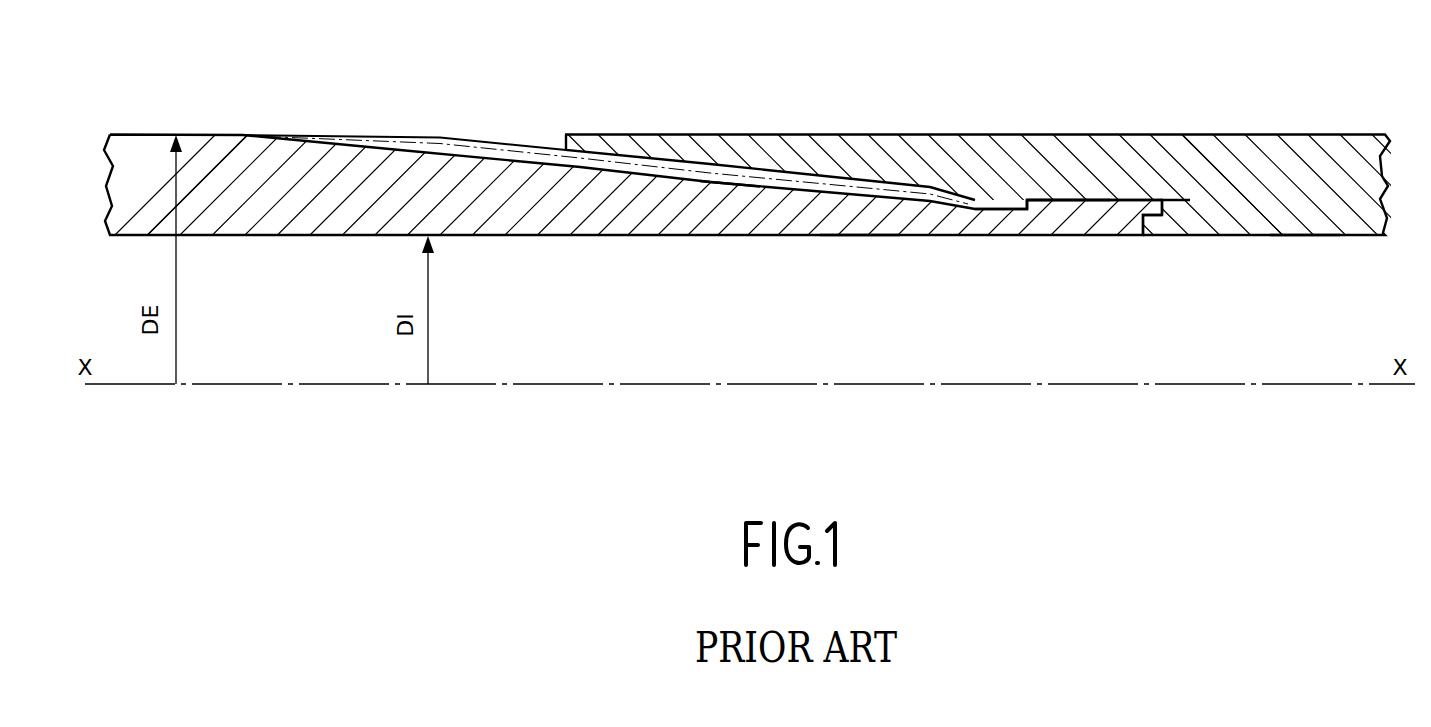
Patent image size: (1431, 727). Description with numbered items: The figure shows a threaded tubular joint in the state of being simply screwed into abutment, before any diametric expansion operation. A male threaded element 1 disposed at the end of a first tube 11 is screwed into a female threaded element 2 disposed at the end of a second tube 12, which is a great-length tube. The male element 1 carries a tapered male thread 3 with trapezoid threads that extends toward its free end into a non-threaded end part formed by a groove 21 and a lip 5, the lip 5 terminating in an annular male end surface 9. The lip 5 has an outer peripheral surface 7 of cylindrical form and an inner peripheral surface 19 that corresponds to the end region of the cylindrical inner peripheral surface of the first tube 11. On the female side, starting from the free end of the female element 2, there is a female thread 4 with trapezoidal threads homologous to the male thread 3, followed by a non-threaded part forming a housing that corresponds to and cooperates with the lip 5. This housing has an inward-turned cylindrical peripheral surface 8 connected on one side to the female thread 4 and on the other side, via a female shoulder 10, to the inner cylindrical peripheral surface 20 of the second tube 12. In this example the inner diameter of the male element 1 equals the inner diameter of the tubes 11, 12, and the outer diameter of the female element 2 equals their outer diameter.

The male threaded element 1 is at (664, 237).
The female threaded element 2 is at (842, 113).
The male thread 3 is at (468, 150).
The female thread 4 is at (742, 195).
The lip 5 is at (1082, 213).
The outer peripheral surface 7 is at (1053, 203).
The peripheral surface 8 is at (1103, 200).
The annular male end surface 9 is at (1140, 212).
The female shoulder 10 is at (1170, 212).
The first tube 11 is at (247, 178).
The second tube 12 is at (1255, 190).
The inner peripheral surface 19 is at (858, 237).
The inner cylindrical peripheral surface 20 is at (1305, 236).
The groove 21 is at (1017, 207).